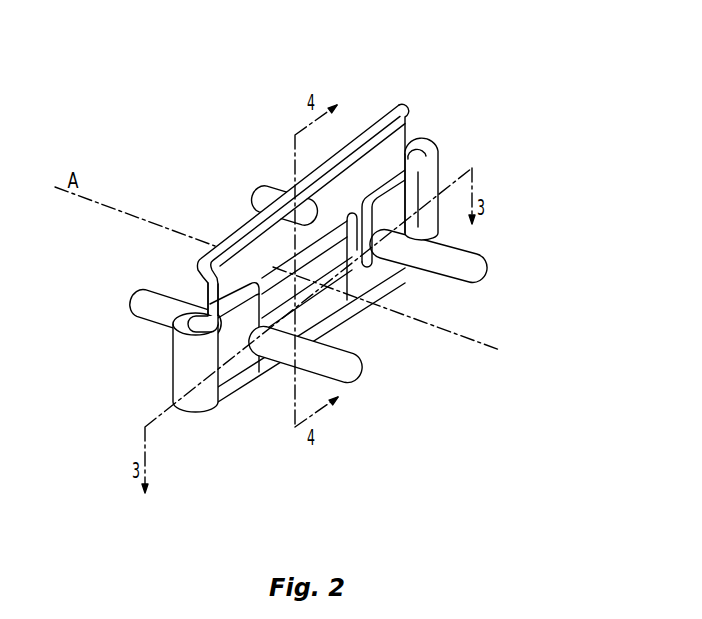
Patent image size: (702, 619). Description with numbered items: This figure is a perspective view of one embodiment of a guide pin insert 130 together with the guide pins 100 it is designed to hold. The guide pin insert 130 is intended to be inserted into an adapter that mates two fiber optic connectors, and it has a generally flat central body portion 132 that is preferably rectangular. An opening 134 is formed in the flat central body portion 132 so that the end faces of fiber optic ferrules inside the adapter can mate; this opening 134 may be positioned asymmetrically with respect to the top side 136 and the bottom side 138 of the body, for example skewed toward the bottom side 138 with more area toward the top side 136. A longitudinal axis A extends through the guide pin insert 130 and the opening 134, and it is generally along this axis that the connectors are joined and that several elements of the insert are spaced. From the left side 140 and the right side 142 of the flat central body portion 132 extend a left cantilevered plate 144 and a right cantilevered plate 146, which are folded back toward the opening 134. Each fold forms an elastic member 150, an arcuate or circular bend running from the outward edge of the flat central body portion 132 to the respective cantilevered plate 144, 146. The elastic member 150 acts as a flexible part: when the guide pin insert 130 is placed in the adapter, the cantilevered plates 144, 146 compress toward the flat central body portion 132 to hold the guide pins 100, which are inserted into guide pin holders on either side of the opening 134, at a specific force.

The guide pin 100 is at (297, 250).
The guide pin insert 130 is at (304, 165).
The flat central body portion 132 is at (204, 286).
The opening 134 is at (331, 258).
The top side 136 is at (352, 141).
The bottom side 138 is at (259, 392).
The left side 140 is at (135, 368).
The right side 142 is at (425, 190).
The left cantilevered plate 144 is at (229, 372).
The right cantilevered plate 146 is at (408, 190).
The elastic member 150 is at (277, 274).